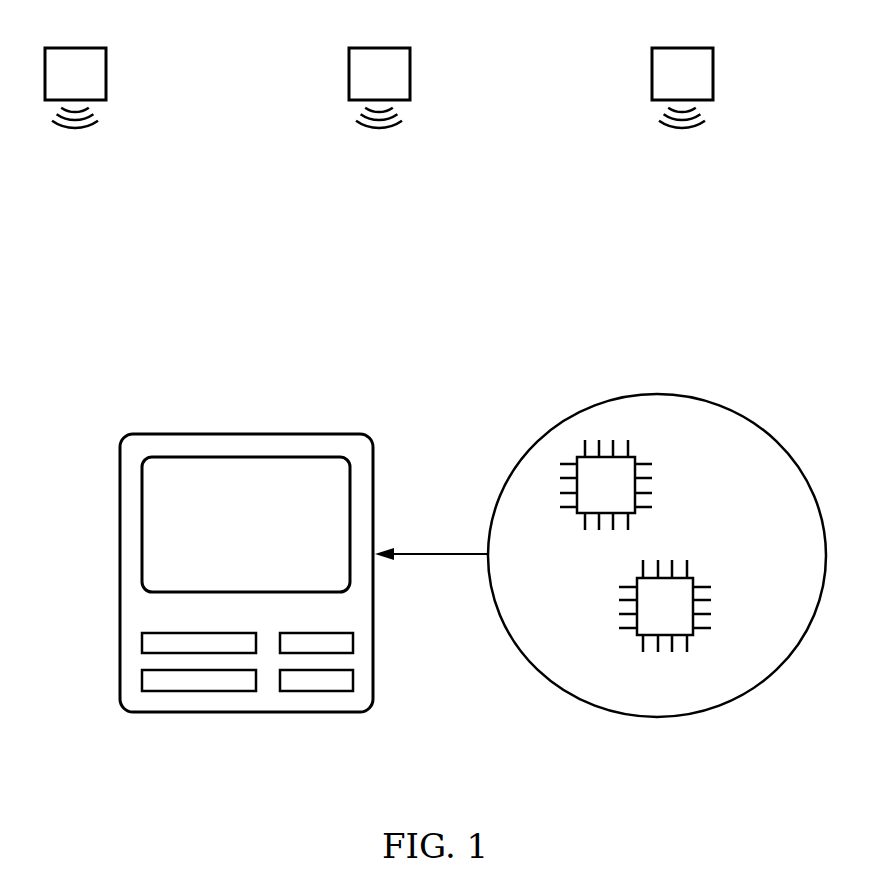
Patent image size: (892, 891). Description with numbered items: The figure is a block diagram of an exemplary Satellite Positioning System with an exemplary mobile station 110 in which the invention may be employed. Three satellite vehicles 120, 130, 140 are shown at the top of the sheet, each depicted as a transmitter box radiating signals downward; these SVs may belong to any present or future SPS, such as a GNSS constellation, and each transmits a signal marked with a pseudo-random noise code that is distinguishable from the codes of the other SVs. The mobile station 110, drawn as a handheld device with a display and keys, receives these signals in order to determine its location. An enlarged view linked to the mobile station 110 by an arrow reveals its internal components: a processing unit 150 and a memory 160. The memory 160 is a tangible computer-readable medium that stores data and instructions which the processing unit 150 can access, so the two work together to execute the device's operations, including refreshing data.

The mobile station 110 is at (320, 434).
The satellite vehicle 120 is at (75, 48).
The satellite vehicle 130 is at (379, 48).
The satellite vehicle 140 is at (682, 48).
The processing unit 150 is at (635, 513).
The memory 160 is at (693, 635).